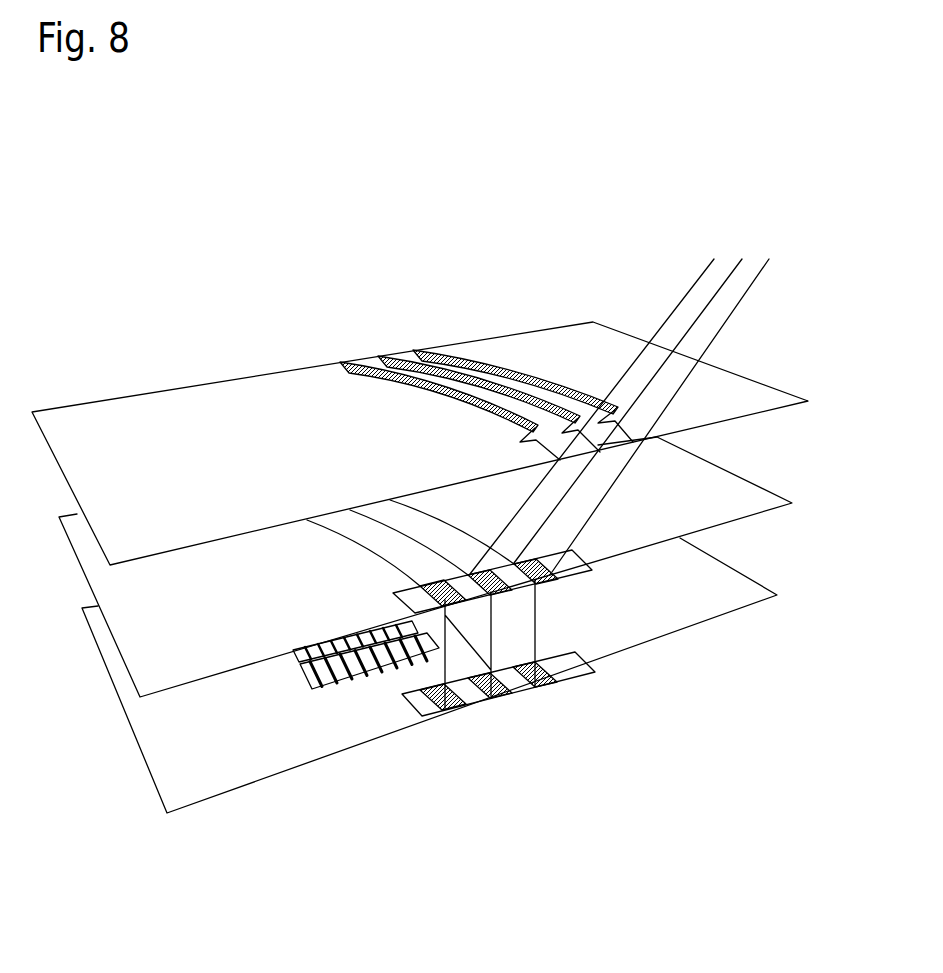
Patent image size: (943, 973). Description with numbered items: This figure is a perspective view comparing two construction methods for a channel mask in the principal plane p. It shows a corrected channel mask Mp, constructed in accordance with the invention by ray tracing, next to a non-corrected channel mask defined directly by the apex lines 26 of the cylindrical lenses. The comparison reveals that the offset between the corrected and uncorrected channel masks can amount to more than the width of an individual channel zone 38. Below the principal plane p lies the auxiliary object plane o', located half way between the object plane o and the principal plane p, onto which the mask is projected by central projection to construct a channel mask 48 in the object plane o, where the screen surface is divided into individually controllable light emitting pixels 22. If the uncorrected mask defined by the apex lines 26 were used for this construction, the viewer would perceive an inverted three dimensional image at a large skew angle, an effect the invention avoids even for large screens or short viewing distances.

The principal plane p is at (250, 382).
The channel zone 38 is at (365, 372).
The corrected channel mask Mp is at (486, 362).
The apex lines 26 is at (537, 452).
The auxiliary object plane o' is at (436, 567).
The object plane o is at (429, 675).
The channel mask 48 is at (520, 684).
The light emitting pixels 22 is at (312, 688).